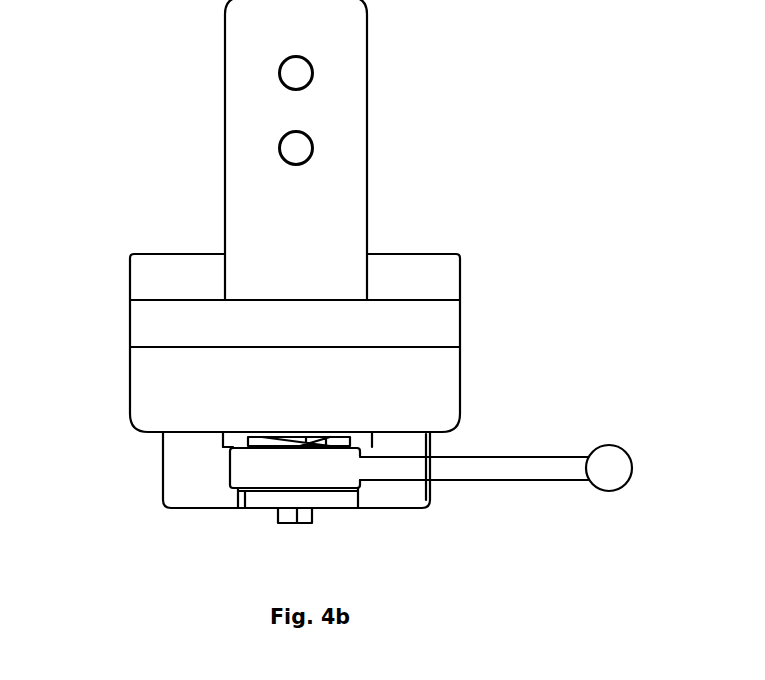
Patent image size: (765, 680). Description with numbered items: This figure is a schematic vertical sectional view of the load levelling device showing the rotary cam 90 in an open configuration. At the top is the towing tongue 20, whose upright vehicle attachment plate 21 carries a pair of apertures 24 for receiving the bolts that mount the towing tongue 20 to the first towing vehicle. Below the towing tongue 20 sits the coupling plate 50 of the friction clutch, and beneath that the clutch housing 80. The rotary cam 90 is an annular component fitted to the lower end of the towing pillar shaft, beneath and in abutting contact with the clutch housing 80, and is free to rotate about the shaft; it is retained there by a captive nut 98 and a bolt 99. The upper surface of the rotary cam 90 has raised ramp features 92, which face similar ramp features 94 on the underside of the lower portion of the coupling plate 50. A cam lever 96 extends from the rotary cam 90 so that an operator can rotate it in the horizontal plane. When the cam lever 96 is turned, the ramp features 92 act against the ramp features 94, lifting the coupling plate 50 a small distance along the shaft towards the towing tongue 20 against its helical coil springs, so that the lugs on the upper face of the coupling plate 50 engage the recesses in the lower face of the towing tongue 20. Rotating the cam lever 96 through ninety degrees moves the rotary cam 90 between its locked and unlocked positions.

The towing tongue 20 is at (419, 254).
The vehicle attachment plate 21 is at (224, 117).
The apertures 24 is at (313, 148).
The coupling plate 50 is at (460, 327).
The clutch housing 80 is at (461, 395).
The rotary cam 90 is at (230, 468).
The ramp features 92 is at (235, 447).
The ramp features 94 is at (250, 441).
The cam lever 96 is at (496, 478).
The captive nut 98 is at (245, 503).
The bolt 99 is at (280, 522).